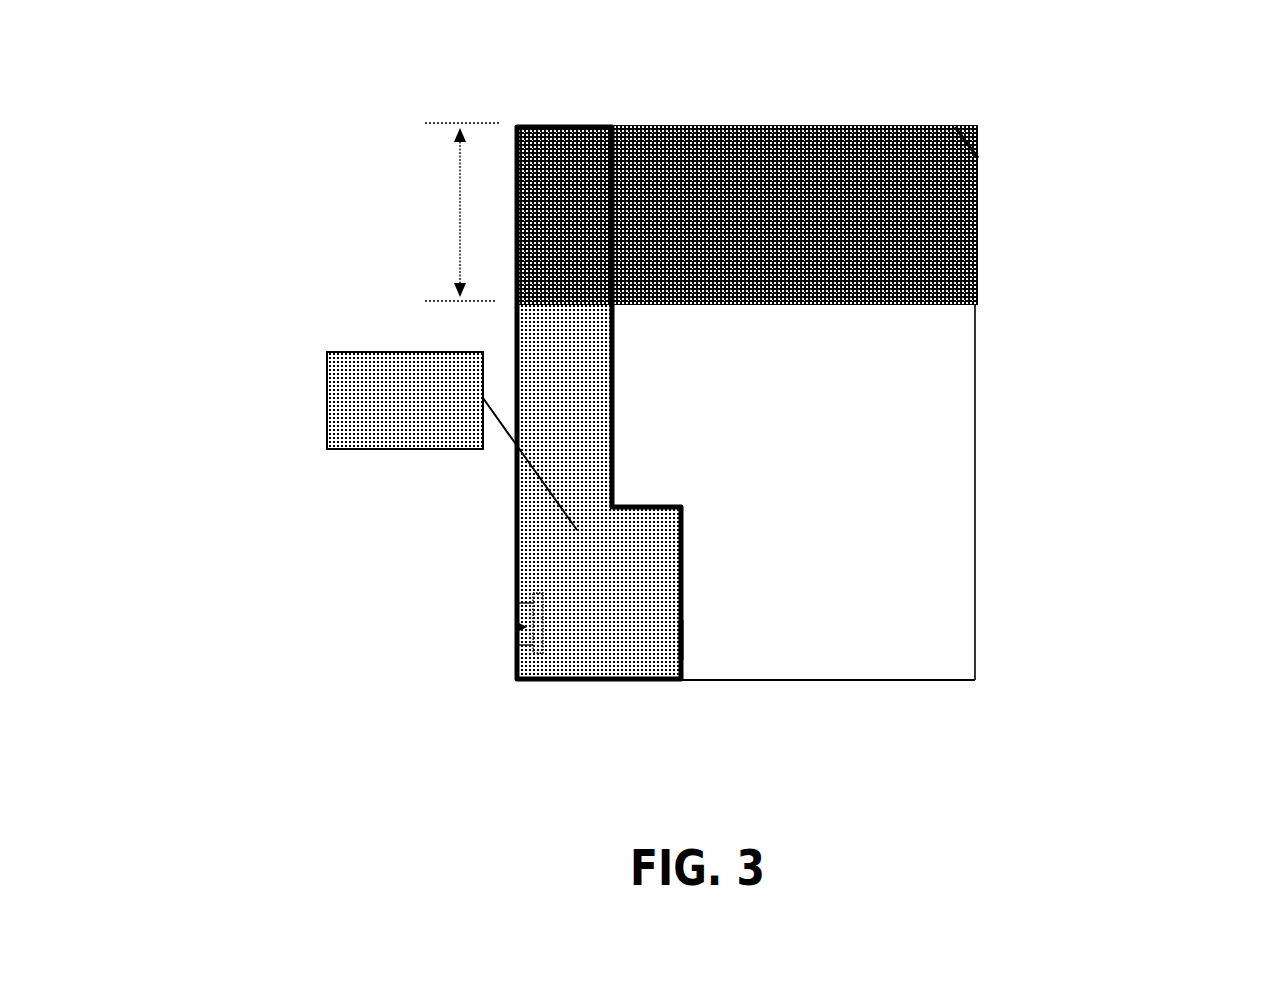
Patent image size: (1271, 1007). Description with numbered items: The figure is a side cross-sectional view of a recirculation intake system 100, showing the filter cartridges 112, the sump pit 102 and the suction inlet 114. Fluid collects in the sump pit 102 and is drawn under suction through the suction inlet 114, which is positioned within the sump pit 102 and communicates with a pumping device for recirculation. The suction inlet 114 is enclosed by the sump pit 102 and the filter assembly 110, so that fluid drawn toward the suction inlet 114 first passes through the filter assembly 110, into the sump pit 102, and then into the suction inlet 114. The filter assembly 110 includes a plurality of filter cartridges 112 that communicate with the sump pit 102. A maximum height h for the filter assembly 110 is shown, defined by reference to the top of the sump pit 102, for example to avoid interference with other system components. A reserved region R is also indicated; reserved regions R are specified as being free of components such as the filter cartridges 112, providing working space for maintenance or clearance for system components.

The recirculation intake system 100 is at (689, 401).
The sump pit 102 is at (952, 545).
The filter assembly 110 is at (500, 120).
The filter cartridge 112 is at (973, 257).
The suction inlet 114 is at (513, 565).
The reserved region R is at (685, 640).
The maximum height h is at (462, 212).